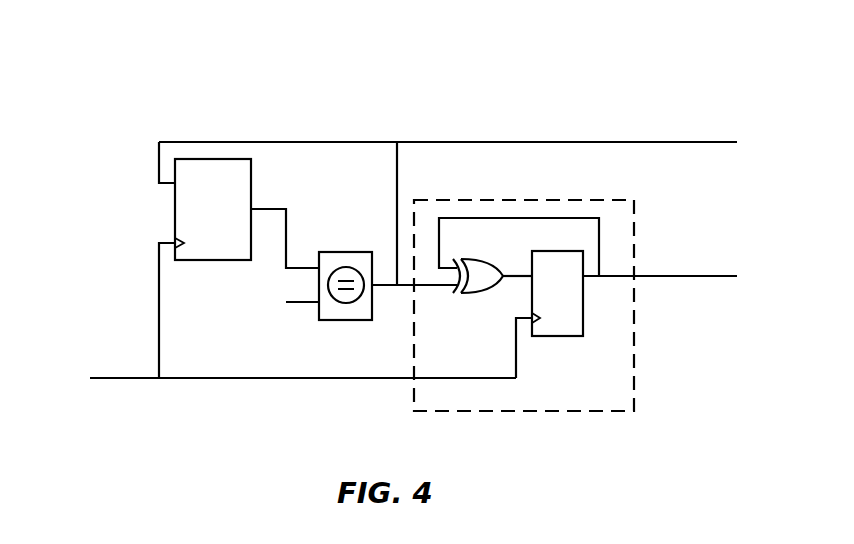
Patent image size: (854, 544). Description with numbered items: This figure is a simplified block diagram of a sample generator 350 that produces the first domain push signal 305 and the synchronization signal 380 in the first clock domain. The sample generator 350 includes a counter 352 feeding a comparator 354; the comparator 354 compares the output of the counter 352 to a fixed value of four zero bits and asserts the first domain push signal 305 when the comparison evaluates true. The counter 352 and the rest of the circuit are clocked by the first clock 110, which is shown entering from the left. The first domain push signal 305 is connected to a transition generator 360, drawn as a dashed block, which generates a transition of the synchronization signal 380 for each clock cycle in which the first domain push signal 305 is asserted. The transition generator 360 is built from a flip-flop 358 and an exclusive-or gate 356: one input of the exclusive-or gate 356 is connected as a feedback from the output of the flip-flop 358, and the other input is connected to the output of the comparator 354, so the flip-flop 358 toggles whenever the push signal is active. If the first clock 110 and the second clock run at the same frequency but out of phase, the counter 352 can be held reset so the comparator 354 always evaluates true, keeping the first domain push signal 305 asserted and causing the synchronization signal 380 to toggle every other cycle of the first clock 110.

The sample generator 350 is at (191, 86).
The first domain push signal 305 is at (637, 141).
The first clock 110 is at (228, 380).
The counter 352 is at (226, 262).
The comparator 354 is at (356, 321).
The exclusive-or gate 356 is at (481, 296).
The flip-flop 358 is at (557, 293).
The transition generator 360 is at (634, 379).
The synchronization signal 380 is at (690, 278).